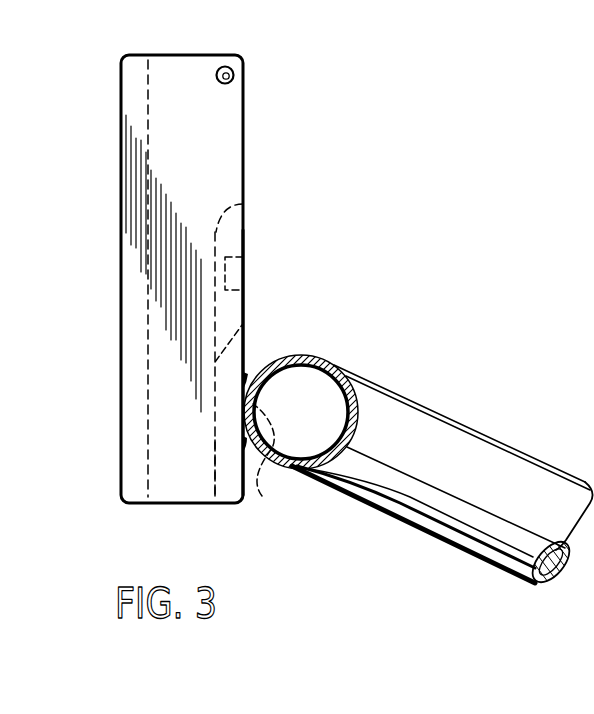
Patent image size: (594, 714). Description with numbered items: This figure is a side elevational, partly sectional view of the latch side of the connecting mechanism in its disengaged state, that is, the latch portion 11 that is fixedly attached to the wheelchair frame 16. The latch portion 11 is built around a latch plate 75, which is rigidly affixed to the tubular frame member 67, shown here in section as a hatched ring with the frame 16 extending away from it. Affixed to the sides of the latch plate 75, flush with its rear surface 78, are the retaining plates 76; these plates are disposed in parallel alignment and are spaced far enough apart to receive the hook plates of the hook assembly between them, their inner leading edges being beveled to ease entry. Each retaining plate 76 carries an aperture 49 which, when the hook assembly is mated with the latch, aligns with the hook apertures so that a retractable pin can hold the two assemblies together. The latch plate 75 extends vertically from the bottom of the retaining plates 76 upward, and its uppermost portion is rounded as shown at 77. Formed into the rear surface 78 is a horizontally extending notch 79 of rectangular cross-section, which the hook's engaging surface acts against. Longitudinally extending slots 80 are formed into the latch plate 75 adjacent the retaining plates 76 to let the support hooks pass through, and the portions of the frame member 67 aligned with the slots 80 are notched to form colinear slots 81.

The latch portion 11 is at (257, 181).
The wheelchair frame 16 is at (346, 478).
The apertures 49 is at (220, 64).
The tubular frame member 67 is at (326, 356).
The latch plate 75 is at (212, 474).
The retaining plates 76 is at (122, 410).
The rounded uppermost portion 77 is at (224, 214).
The rear surface 78 is at (243, 308).
The notch 79 is at (235, 281).
The slots 80 is at (216, 439).
The colinear slots 81 is at (248, 419).